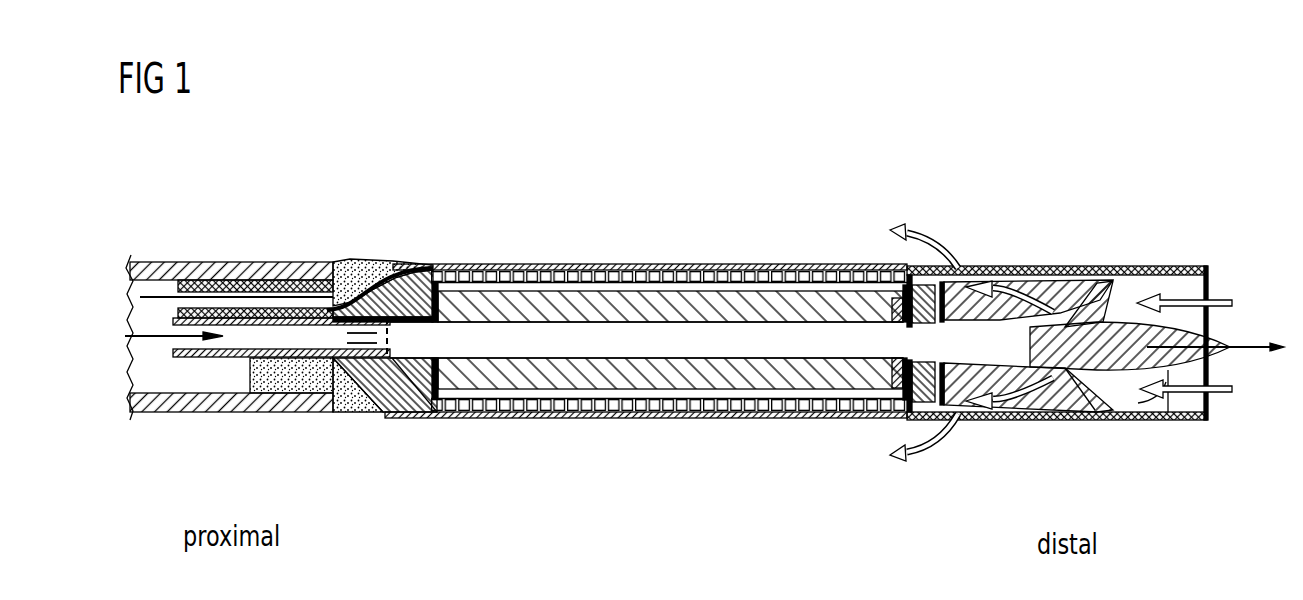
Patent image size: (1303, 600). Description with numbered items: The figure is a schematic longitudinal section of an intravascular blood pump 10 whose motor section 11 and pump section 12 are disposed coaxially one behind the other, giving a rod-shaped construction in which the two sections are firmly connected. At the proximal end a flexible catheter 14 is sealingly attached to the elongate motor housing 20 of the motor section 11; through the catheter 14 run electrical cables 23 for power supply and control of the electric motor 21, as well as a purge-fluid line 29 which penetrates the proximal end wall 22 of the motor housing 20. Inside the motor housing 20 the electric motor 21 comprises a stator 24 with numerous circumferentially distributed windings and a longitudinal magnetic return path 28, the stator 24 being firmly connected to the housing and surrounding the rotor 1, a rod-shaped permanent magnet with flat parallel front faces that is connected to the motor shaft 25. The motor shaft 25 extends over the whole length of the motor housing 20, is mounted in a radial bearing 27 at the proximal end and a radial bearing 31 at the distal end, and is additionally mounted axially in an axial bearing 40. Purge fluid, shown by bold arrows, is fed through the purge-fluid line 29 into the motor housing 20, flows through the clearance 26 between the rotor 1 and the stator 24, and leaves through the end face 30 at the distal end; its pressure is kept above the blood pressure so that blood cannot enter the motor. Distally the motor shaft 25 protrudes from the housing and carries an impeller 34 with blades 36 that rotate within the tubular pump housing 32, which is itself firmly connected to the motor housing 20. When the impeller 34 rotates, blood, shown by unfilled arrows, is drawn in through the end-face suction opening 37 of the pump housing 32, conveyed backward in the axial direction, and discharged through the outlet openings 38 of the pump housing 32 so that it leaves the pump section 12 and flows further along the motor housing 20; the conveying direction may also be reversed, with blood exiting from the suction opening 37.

The rotor 1 is at (790, 295).
The intravascular blood pump 10 is at (537, 125).
The motor section 11 is at (595, 192).
The pump section 12 is at (1096, 229).
The catheter 14 is at (175, 413).
The motor housing 20 is at (641, 251).
The electric motor 21 is at (773, 476).
The proximal end wall 22 is at (408, 413).
The electrical cables 23 is at (167, 281).
The stator 24 is at (703, 418).
The motor shaft 25 is at (556, 358).
The clearance 26 is at (727, 290).
The radial bearing 27 is at (383, 413).
The magnetic return path 28 is at (756, 418).
The purge-fluid line 29 is at (187, 358).
The end face 30 is at (905, 418).
The radial bearing 31 is at (930, 362).
The pump housing 32 is at (1161, 267).
The impeller 34 is at (1105, 425).
The blades 36 is at (1142, 425).
The suction opening 37 is at (1208, 323).
The outlet openings 38 is at (983, 275).
The axial bearing 40 is at (892, 265).